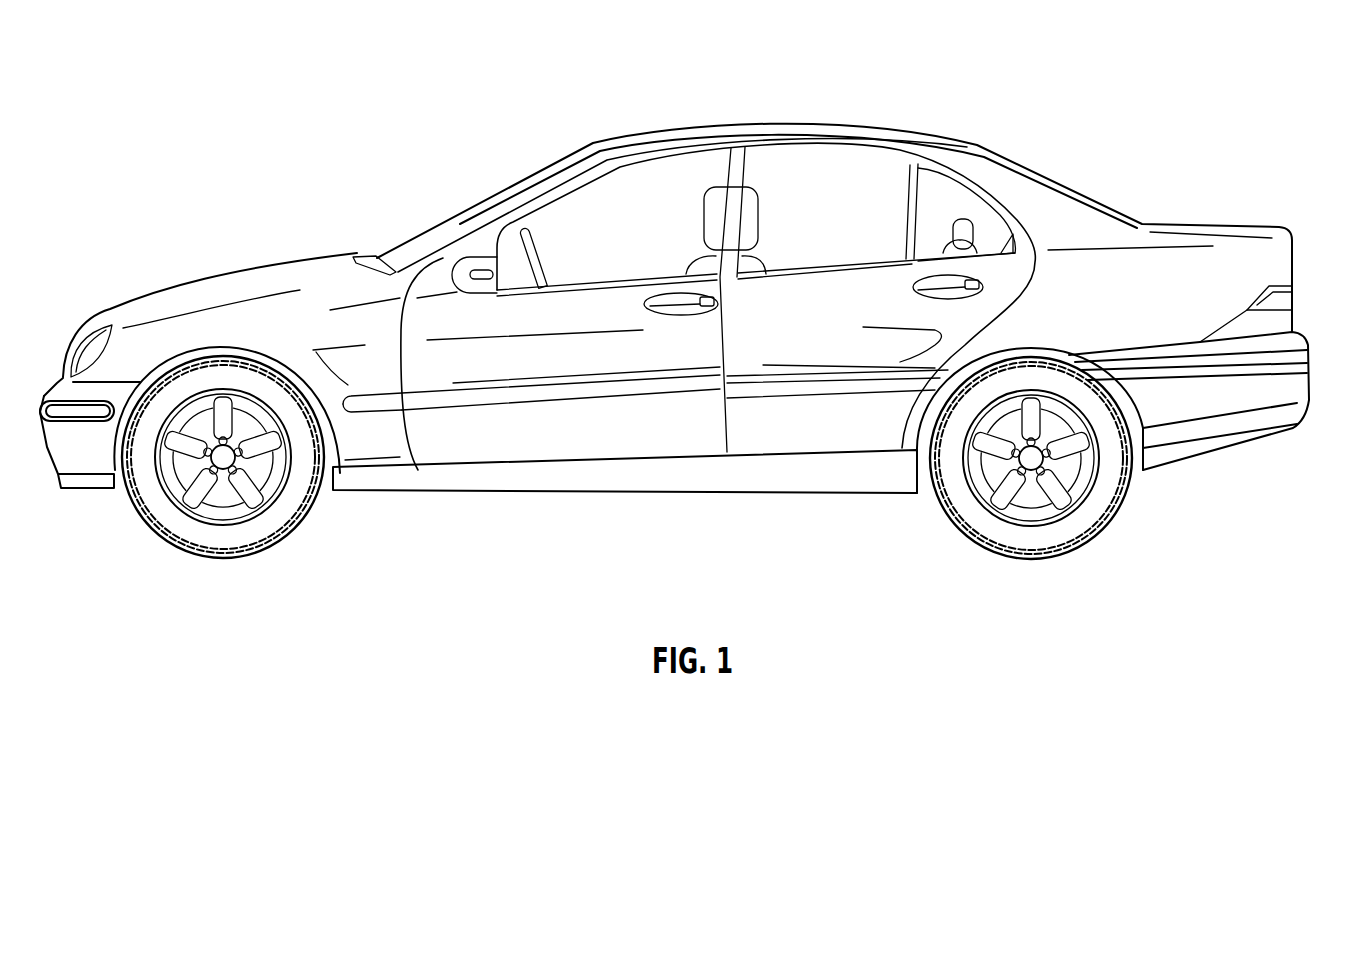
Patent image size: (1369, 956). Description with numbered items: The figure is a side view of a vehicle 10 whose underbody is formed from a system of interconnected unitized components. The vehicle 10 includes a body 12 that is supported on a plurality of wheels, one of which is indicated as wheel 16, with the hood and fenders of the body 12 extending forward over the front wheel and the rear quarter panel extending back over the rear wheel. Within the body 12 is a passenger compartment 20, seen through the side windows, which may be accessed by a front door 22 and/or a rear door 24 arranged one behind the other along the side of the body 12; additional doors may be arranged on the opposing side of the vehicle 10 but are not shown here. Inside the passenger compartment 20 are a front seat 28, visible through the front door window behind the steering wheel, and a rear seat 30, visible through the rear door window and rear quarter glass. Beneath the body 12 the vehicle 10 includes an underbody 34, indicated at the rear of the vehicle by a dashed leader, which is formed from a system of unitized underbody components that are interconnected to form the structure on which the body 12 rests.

The vehicle 10 is at (170, 128).
The body 12 is at (293, 262).
The wheel 16 is at (263, 531).
The passenger compartment 20 is at (563, 227).
The front door 22 is at (482, 365).
The rear door 24 is at (805, 343).
The front seat 28 is at (712, 192).
The rear seat 30 is at (937, 200).
The underbody 34 is at (1146, 408).